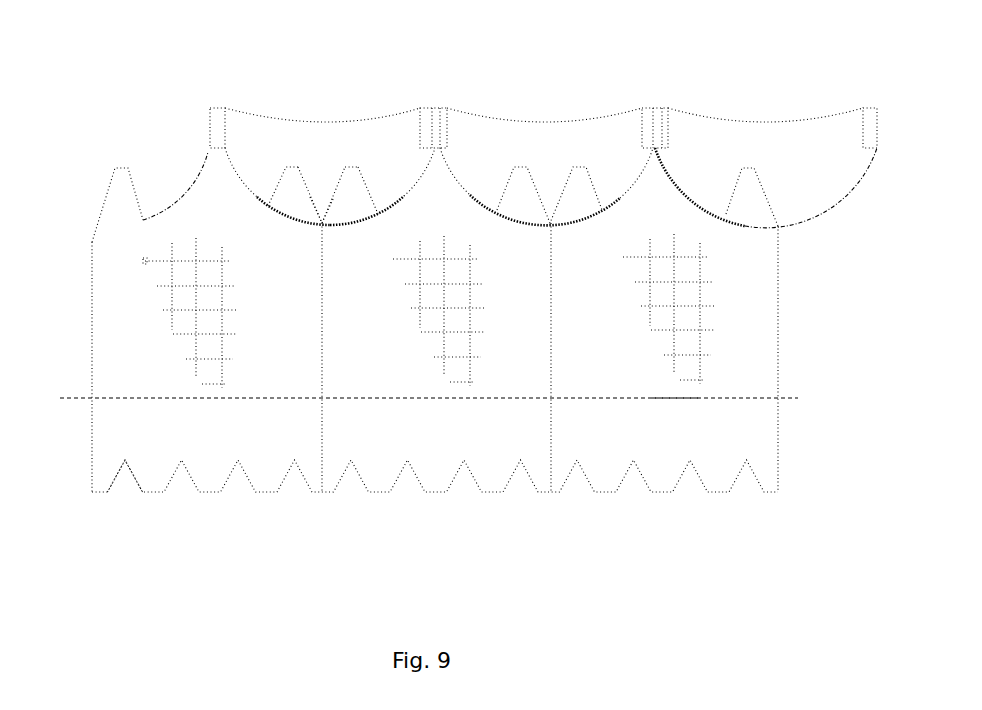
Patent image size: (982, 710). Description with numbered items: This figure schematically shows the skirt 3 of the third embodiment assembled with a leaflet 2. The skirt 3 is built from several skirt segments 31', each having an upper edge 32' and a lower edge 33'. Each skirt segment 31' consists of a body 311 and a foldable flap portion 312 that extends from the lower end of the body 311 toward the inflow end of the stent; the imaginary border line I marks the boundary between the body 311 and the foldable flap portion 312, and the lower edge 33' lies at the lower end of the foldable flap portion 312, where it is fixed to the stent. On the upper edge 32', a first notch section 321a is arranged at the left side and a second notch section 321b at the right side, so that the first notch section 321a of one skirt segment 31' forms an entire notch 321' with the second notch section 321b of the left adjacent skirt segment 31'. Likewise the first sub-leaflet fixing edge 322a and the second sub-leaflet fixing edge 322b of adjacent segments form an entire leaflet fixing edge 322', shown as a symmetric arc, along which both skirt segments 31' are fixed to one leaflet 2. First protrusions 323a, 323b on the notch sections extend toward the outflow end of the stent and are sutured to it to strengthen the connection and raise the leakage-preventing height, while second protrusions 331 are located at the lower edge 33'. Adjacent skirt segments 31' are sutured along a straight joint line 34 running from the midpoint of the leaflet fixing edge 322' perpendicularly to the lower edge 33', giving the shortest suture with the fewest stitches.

The leaflet 2 is at (725, 146).
The skirt 3 is at (158, 144).
The skirt segment 31' is at (48, 358).
The upper edge of skirt 32' is at (133, 175).
The body 311 is at (117, 347).
The foldable flap portion 312 is at (122, 410).
The notch 321' is at (338, 116).
The first notch section 321a is at (390, 168).
The second notch section 321b is at (258, 180).
The leaflet fixing edge 322' is at (351, 257).
The first sub-leaflet fixing edge 322a is at (405, 194).
The second sub-leaflet fixing edge 322b is at (257, 205).
The first protrusion 323a is at (357, 165).
The first protrusion 323b is at (286, 165).
The second protrusion 331 is at (147, 477).
The lower edge of skirt 33' is at (435, 520).
The joint line 34 is at (322, 317).
The border line I is at (652, 398).